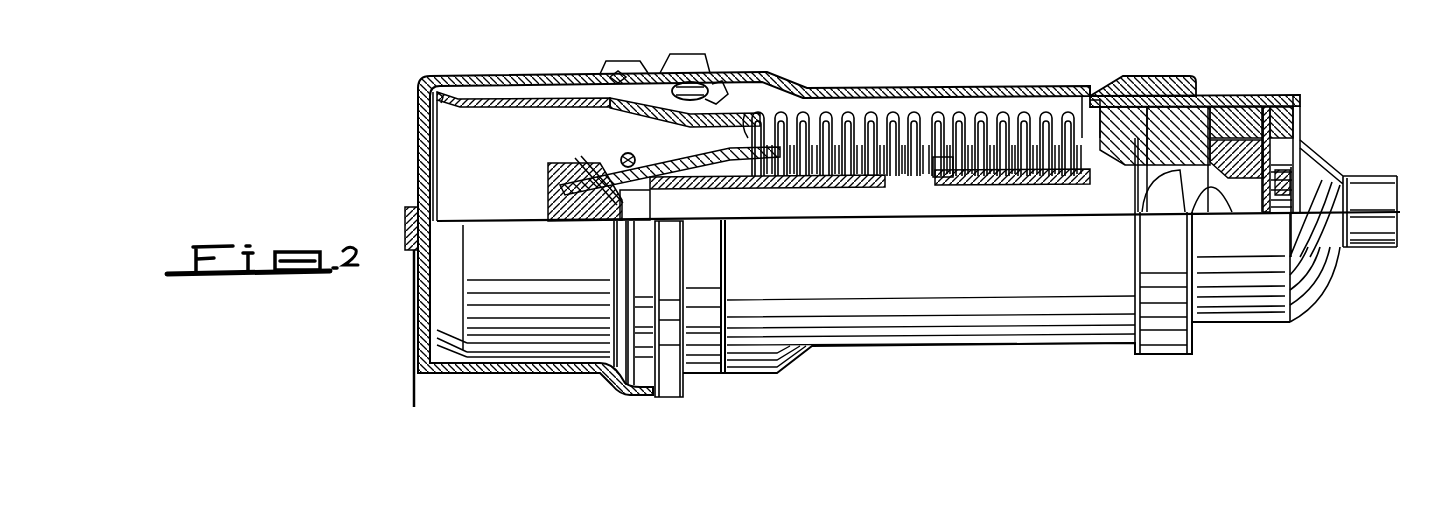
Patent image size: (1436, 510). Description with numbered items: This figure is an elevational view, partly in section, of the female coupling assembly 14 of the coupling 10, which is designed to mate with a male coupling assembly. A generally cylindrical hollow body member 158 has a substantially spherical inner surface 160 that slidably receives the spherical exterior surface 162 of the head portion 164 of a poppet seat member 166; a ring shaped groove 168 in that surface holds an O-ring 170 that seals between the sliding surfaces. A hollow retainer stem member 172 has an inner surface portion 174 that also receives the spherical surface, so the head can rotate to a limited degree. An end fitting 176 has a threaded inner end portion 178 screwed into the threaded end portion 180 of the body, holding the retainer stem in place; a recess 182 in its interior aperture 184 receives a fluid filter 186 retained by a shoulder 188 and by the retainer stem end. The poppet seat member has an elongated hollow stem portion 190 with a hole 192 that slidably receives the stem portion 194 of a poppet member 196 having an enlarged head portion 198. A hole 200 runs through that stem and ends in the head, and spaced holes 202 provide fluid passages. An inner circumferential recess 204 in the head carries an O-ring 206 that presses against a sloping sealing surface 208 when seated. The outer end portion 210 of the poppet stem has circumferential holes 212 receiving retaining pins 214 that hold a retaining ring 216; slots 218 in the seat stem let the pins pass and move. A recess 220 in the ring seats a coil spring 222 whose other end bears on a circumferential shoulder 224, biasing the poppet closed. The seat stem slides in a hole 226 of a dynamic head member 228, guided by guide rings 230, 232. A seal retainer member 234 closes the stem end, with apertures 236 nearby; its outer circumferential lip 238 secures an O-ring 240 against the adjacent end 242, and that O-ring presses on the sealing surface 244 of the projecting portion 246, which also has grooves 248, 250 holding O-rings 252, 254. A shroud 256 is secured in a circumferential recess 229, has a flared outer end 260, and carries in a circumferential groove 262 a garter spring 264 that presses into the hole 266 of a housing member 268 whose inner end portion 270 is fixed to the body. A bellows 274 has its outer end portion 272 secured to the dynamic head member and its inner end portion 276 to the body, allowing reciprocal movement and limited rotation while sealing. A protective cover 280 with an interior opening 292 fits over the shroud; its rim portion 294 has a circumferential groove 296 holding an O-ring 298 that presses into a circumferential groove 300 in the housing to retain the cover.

The connector assembly 10 is at (928, 70).
The female coupling assembly 14 is at (807, 73).
The body member 158 is at (1242, 98).
The inner surface 160 is at (1085, 140).
The exterior spherical shaped surface 162 is at (1163, 82).
The head portion 164 is at (1173, 86).
The poppet seat member 166 is at (1020, 215).
The ring shaped groove 168 is at (1150, 86).
The O-ring 170 is at (1123, 86).
The retainer stem member 172 is at (1296, 110).
The inner surface portion 174 is at (1225, 214).
The end fitting 176 is at (1304, 152).
The threaded inner end portion 178 is at (1240, 97).
The threaded end portion 180 is at (1288, 97).
The recess 182 is at (1290, 285).
The interior aperture 184 is at (1330, 240).
The fluid filter 186 is at (1278, 215).
The shoulder 188 is at (1308, 252).
The stem portion 190 is at (838, 200).
The hole 192 is at (870, 216).
The stem portion 194 is at (958, 216).
The poppet member 196 is at (1056, 215).
The head portion 198 is at (1128, 215).
The hole 200 is at (986, 216).
The holes 202 is at (1078, 216).
The inner circumferential recess 204 is at (1155, 215).
The O-ring 206 is at (1150, 215).
The sealing surface 208 is at (1234, 96).
The outer end portion 210 is at (930, 180).
The circumferential holes 212 is at (946, 216).
The retaining pin 214 is at (915, 222).
The retaining ring 216 is at (938, 152).
The slot 218 is at (888, 222).
The recess 220 is at (978, 160).
The coil spring 222 is at (1035, 215).
The circumferential shoulder 224 is at (1097, 98).
The hole 226 is at (760, 220).
The dynamic head member 228 is at (754, 82).
The circumferential recess 229 is at (691, 60).
The guide ring 230 is at (686, 210).
The guide ring 232 is at (786, 222).
The seal retainer member 234 is at (553, 171).
The aperture 236 is at (605, 222).
The outer circumferential lip 238 is at (550, 170).
The O-ring 240 is at (567, 167).
The end 242 is at (583, 167).
The sealing surface 244 is at (460, 110).
The projecting portion 246 is at (607, 160).
The circumferential groove 248 is at (560, 78).
The circumferential groove 250 is at (695, 80).
The O-ring 252 is at (633, 157).
The O-ring 254 is at (718, 87).
The shroud 256 is at (492, 98).
The outer end 260 is at (425, 80).
The circumferential groove 262 is at (595, 73).
The garter spring 264 is at (612, 59).
The hole 266 is at (781, 76).
The housing member 268 is at (808, 92).
The inner end portion 270 is at (1200, 93).
The outer end portion 272 is at (748, 126).
The bellows 274 is at (870, 112).
The inner end portion 276 is at (1073, 160).
The protective cover 280 is at (524, 374).
The interior opening 292 is at (492, 374).
The rim portion 294 is at (660, 394).
The circumferential groove 296 is at (628, 390).
The O-ring 298 is at (620, 380).
The circumferential groove 300 is at (580, 73).